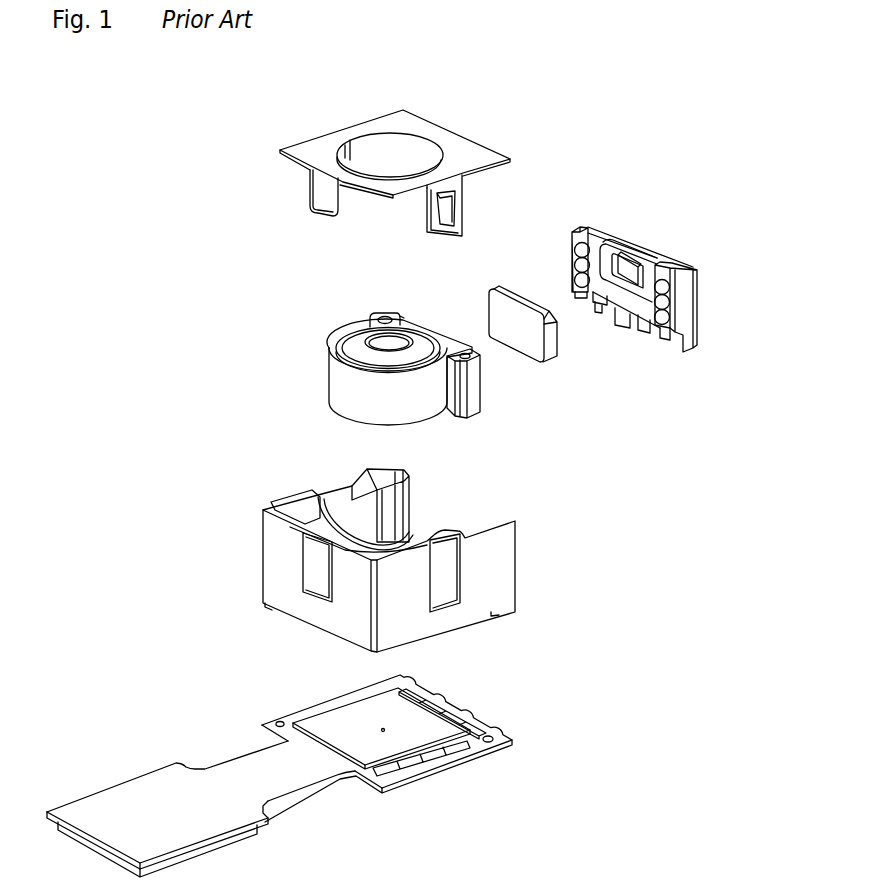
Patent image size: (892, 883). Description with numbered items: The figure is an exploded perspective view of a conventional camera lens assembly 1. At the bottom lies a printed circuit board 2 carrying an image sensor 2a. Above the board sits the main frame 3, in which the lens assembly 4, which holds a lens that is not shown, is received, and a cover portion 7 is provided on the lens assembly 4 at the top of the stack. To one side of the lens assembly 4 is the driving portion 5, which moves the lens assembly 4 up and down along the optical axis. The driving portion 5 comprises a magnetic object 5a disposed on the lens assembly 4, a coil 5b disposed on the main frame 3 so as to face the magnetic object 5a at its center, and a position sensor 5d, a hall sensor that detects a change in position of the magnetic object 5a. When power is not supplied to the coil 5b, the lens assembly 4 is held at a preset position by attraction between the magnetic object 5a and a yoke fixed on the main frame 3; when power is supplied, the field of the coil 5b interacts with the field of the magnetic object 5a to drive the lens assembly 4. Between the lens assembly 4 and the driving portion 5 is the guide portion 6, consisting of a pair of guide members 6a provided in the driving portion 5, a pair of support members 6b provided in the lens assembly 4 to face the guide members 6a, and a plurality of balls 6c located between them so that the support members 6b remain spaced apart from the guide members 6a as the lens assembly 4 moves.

The camera lens assembly 1 is at (188, 123).
The printed circuit board 2 is at (323, 785).
The image sensor 2a is at (330, 720).
The main frame 3 is at (275, 555).
The lens assembly 4 is at (345, 380).
The driving portion 5 is at (755, 183).
The magnetic object 5a is at (493, 317).
The coil 5b is at (625, 260).
The position sensor 5d is at (636, 282).
The guide portion 6 is at (755, 298).
The guide members 6a is at (580, 226).
The support members 6b is at (477, 394).
The balls 6c is at (573, 249).
The cover portion 7 is at (433, 130).